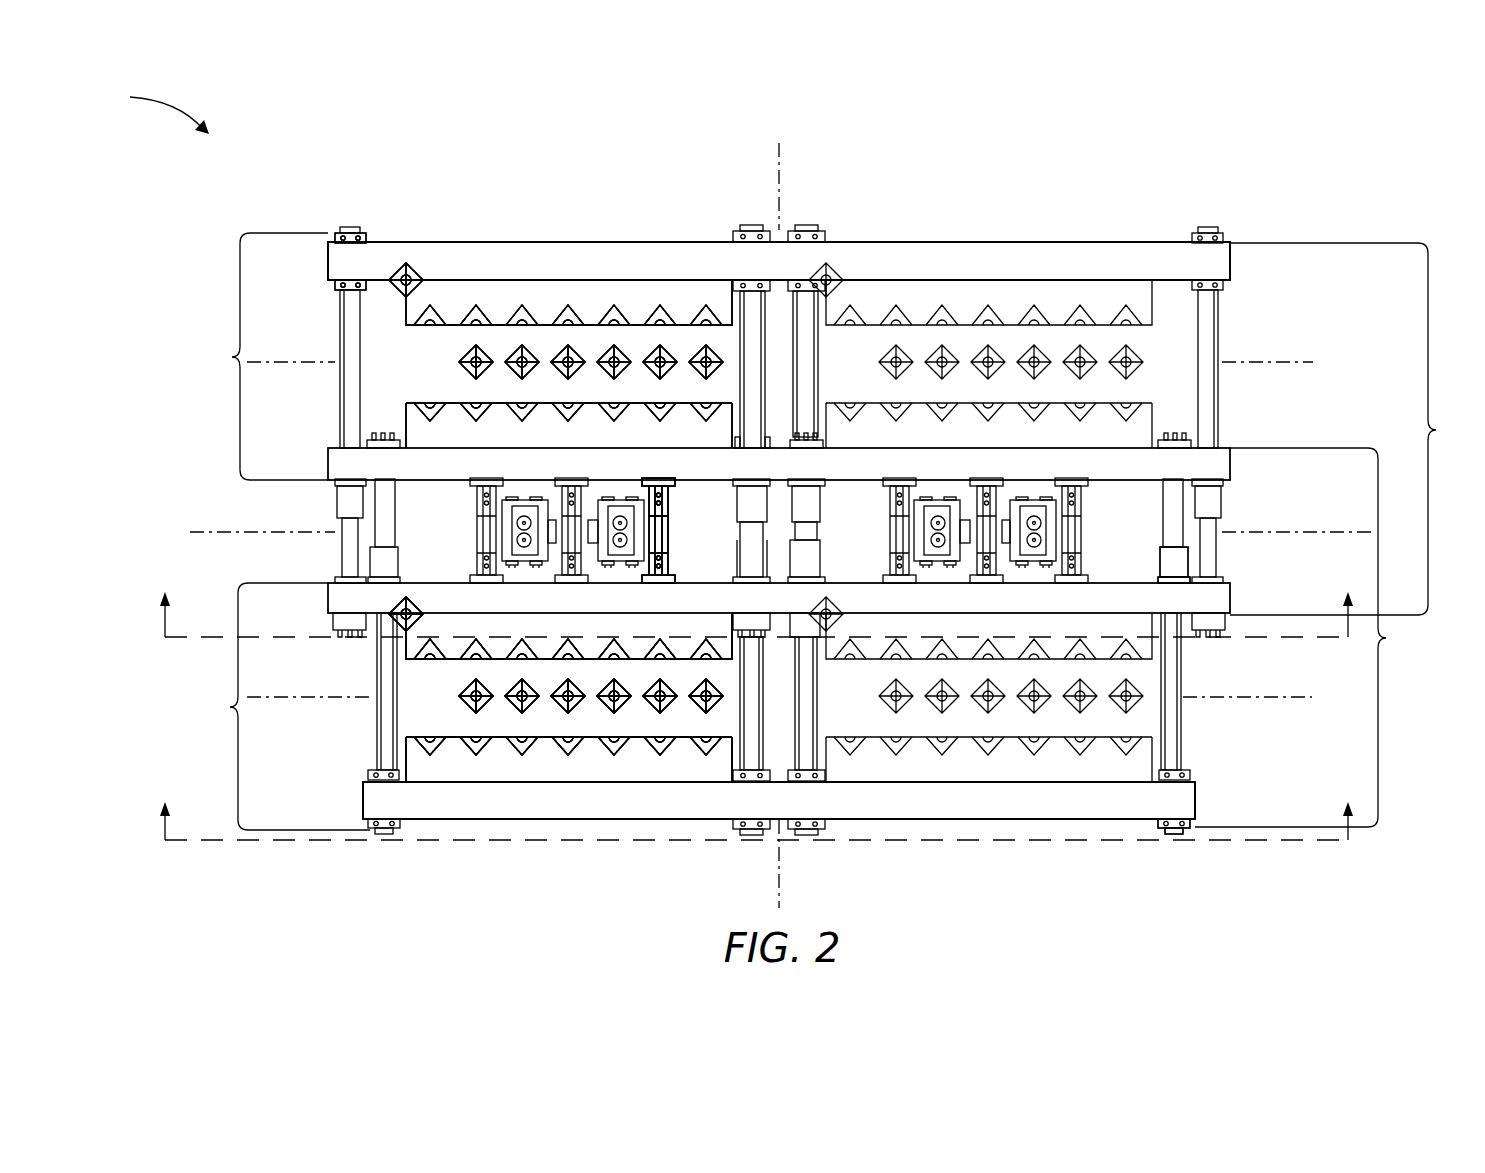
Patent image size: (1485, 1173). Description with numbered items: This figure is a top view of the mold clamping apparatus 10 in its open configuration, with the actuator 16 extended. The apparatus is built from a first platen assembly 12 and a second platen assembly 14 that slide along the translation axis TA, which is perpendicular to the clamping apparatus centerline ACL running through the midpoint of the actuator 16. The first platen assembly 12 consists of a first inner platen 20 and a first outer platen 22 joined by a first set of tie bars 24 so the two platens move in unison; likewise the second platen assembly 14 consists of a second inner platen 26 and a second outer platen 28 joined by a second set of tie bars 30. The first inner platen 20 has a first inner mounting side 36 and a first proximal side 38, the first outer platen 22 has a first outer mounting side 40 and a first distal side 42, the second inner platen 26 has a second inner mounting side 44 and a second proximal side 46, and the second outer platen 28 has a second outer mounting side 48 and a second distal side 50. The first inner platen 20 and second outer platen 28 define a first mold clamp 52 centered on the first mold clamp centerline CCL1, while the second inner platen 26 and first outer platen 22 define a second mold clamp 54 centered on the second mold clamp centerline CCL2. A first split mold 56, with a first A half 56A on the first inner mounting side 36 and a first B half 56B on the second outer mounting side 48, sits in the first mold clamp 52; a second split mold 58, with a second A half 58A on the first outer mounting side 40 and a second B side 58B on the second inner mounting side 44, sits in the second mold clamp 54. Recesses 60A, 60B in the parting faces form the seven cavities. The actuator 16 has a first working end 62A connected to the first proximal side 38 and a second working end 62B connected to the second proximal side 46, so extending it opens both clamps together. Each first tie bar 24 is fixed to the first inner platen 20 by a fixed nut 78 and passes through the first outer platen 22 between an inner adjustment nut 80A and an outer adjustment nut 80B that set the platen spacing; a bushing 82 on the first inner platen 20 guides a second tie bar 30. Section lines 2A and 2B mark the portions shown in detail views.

The mold clamping apparatus 10 is at (151, 110).
The first platen assembly 12 is at (1350, 429).
The second platen assembly 14 is at (1309, 637).
The actuator assembly 16 is at (500, 538).
The first inner platen 20 is at (920, 600).
The first outer platen 22 is at (948, 268).
The first set of tie bars 24 is at (350, 228).
The second inner platen 26 is at (920, 460).
The second outer platen 28 is at (865, 808).
The second set of tie bars 30 is at (1173, 836).
The first inner mounting side 36 is at (1110, 615).
The first proximal side 38 is at (1147, 577).
The first outer mounting side 40 is at (1000, 283).
The first distal side 42 is at (1120, 235).
The second inner mounting side 44 is at (1108, 447).
The second proximal side 46 is at (1090, 486).
The second outer mounting side 48 is at (982, 775).
The second distal side 50 is at (1118, 822).
The first mold clamp 52 is at (280, 706).
The second mold clamp 54 is at (260, 356).
The first split mold 56 is at (651, 800).
The first A half 56A is at (527, 623).
The first B half 56B is at (598, 768).
The second split mold 58 is at (638, 267).
The second A half 58A is at (548, 300).
The second B side 58B is at (527, 437).
The recess 60A is at (432, 652).
The recess 60B is at (433, 756).
The first working end 62A is at (682, 565).
The second working end 62B is at (680, 496).
The fixed nut 78 is at (355, 640).
The inner adjustment nut 80A is at (368, 282).
The outer adjustment nut 80B is at (368, 242).
The bushing 82 is at (822, 556).
The translation axis TA is at (779, 158).
The clamping apparatus centerline ACL is at (200, 520).
The first mold clamp centerline CCL1 is at (310, 700).
The second mold clamp centerline CCL2 is at (293, 365).
The section line 2A is at (756, 600).
The section line 2B is at (756, 808).